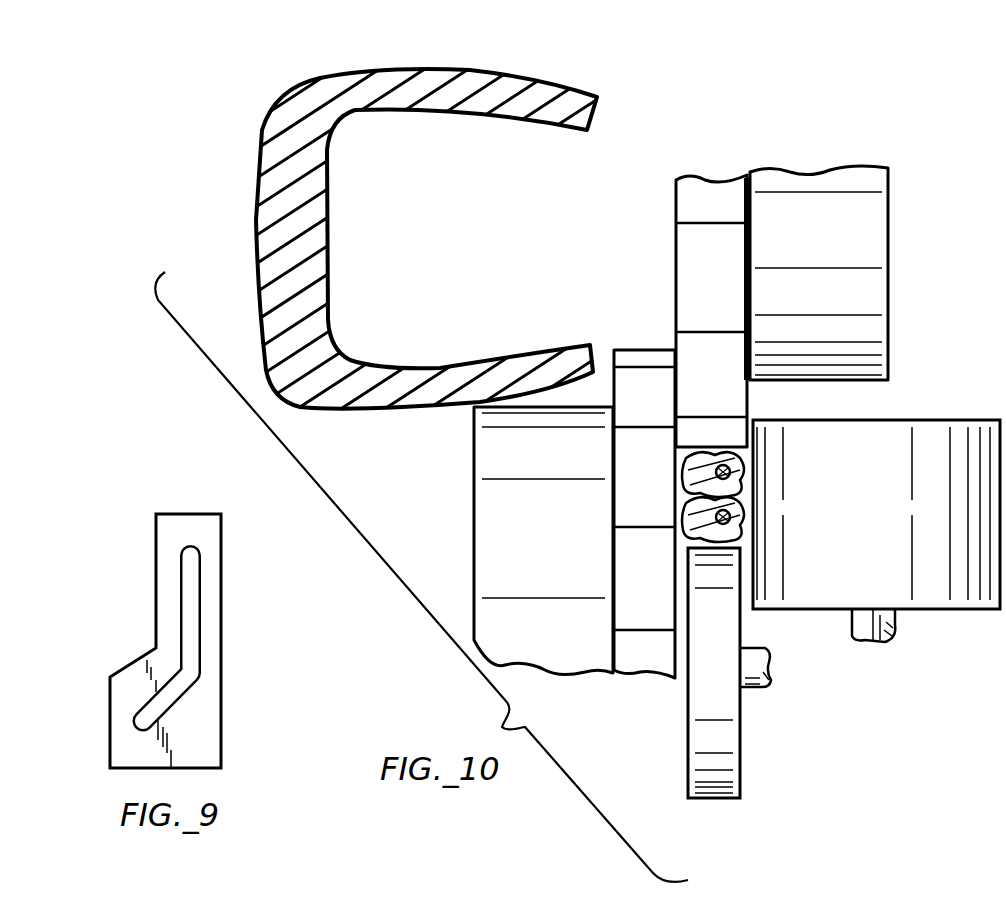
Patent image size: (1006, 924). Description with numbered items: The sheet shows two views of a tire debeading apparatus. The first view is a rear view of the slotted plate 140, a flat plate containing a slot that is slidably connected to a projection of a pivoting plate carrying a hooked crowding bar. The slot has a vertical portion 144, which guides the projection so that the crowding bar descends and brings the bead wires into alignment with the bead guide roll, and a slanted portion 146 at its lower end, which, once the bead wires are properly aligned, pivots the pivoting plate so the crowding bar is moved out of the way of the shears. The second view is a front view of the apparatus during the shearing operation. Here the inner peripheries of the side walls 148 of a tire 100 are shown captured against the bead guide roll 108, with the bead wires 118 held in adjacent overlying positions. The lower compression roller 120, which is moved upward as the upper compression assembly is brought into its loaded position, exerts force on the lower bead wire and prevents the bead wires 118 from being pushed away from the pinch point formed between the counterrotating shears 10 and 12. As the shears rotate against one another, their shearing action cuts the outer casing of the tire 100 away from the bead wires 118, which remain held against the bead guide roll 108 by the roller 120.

In FIG. 10, the counterrotating shear 10 is at (697, 263).
In FIG. 10, the counterrotating shear 12 is at (638, 380).
In FIG. 10, the tire 100 is at (410, 400).
In FIG. 10, the bead guide roll 108 is at (933, 598).
In FIG. 10, the bead wires 118 is at (712, 516).
In FIG. 10, the lower compression roller 120 is at (727, 763).
In FIG. 9, the slotted plate 140 is at (210, 588).
In FIG. 9, the vertical portion 144 is at (192, 653).
In FIG. 9, the slanted portion 146 is at (177, 690).
In FIG. 10, the side walls 148 is at (745, 516).